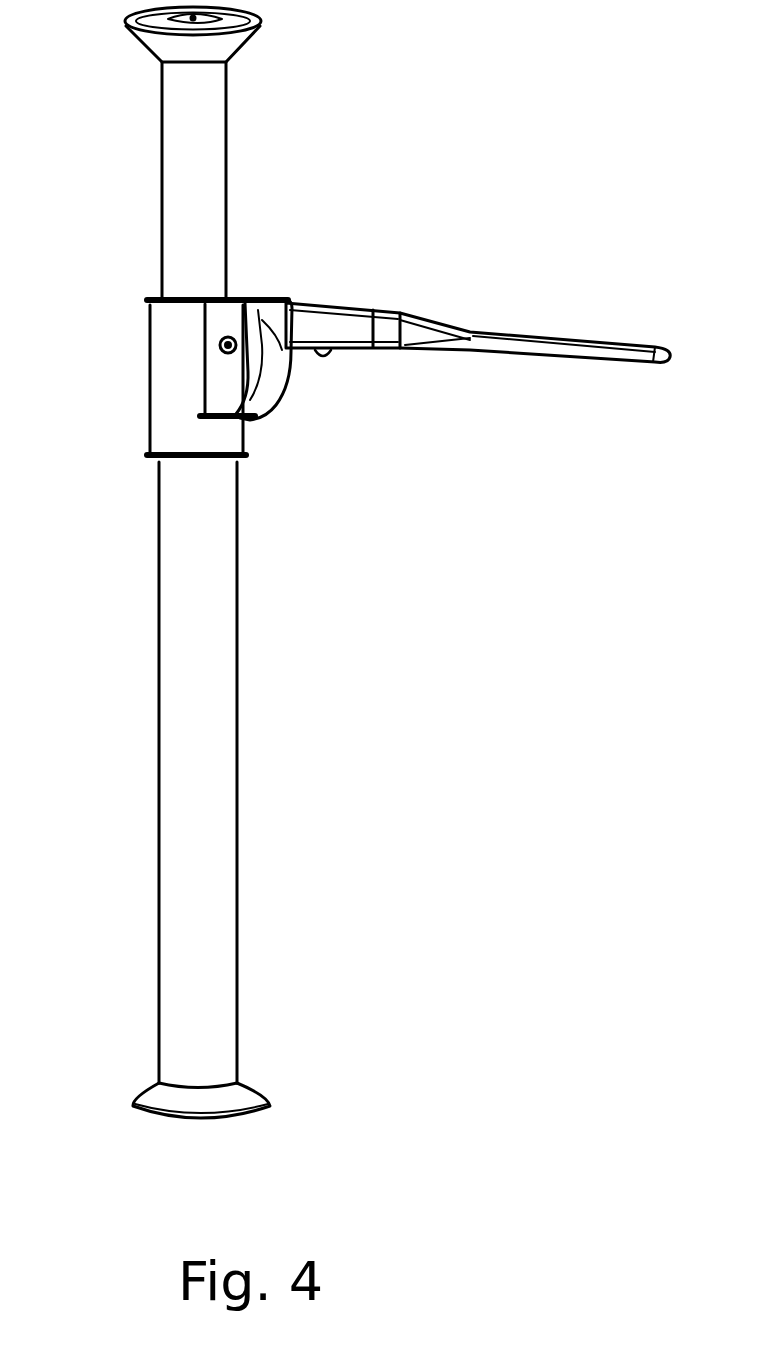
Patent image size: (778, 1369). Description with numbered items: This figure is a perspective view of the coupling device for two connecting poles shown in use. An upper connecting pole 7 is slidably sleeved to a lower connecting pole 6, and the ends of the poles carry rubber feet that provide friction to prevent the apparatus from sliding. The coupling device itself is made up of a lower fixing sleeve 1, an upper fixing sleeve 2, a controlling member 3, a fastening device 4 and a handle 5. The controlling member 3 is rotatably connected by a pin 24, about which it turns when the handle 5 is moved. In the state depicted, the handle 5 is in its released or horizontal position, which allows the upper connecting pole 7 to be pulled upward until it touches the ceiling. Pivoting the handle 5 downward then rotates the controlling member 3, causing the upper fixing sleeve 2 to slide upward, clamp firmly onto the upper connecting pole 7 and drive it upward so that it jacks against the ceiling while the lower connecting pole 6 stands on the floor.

The lower fixing sleeve 1 is at (180, 398).
The upper fixing sleeve 2 is at (236, 297).
The controlling member 3 is at (285, 300).
The fastening device 4 is at (286, 436).
The handle 5 is at (437, 330).
The lower connecting pole 6 is at (210, 1002).
The upper connecting pole 7 is at (195, 84).
The pin 24 is at (219, 345).